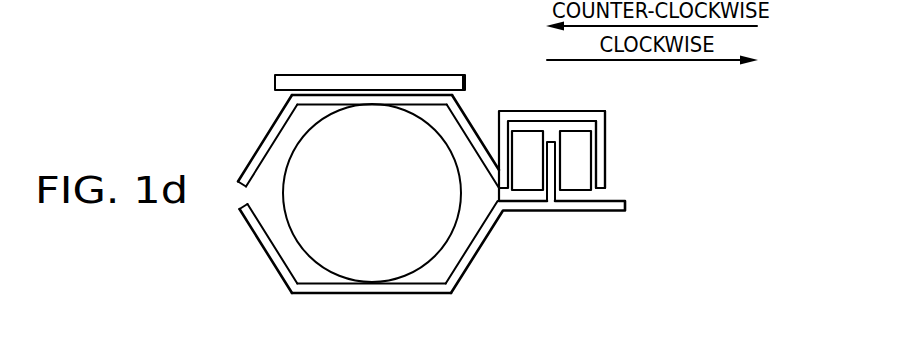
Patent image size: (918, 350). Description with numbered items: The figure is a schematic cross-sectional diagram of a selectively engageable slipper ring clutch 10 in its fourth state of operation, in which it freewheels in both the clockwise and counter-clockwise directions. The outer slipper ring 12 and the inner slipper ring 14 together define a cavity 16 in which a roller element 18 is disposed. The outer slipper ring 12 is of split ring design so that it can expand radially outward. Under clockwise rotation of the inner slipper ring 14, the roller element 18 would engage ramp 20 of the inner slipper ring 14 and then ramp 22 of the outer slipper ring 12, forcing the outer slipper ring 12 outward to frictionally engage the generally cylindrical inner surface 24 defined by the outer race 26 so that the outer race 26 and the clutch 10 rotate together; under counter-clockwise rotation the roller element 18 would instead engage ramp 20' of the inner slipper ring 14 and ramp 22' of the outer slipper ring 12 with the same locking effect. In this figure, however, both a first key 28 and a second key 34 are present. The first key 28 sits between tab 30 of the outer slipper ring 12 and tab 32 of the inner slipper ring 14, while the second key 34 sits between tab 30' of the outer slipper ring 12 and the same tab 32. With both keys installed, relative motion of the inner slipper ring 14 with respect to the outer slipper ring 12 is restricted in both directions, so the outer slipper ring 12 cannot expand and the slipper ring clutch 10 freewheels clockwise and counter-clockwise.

The slipper ring clutch 10 is at (247, 98).
The outer slipper ring 12 is at (370, 93).
The inner slipper ring 14 is at (434, 294).
The cavity 16 is at (480, 196).
The roller element 18 is at (324, 119).
The ramp 20 is at (252, 248).
The ramp 20' is at (535, 257).
The ramp 22 is at (459, 104).
The ramp 22' is at (252, 141).
The cylindrical inner surface 24 is at (397, 92).
The outer race 26 is at (466, 84).
The first key 28 is at (522, 192).
The tab 30 is at (545, 132).
The tab 30' is at (649, 149).
The tab 32 is at (557, 197).
The second key 34 is at (597, 159).